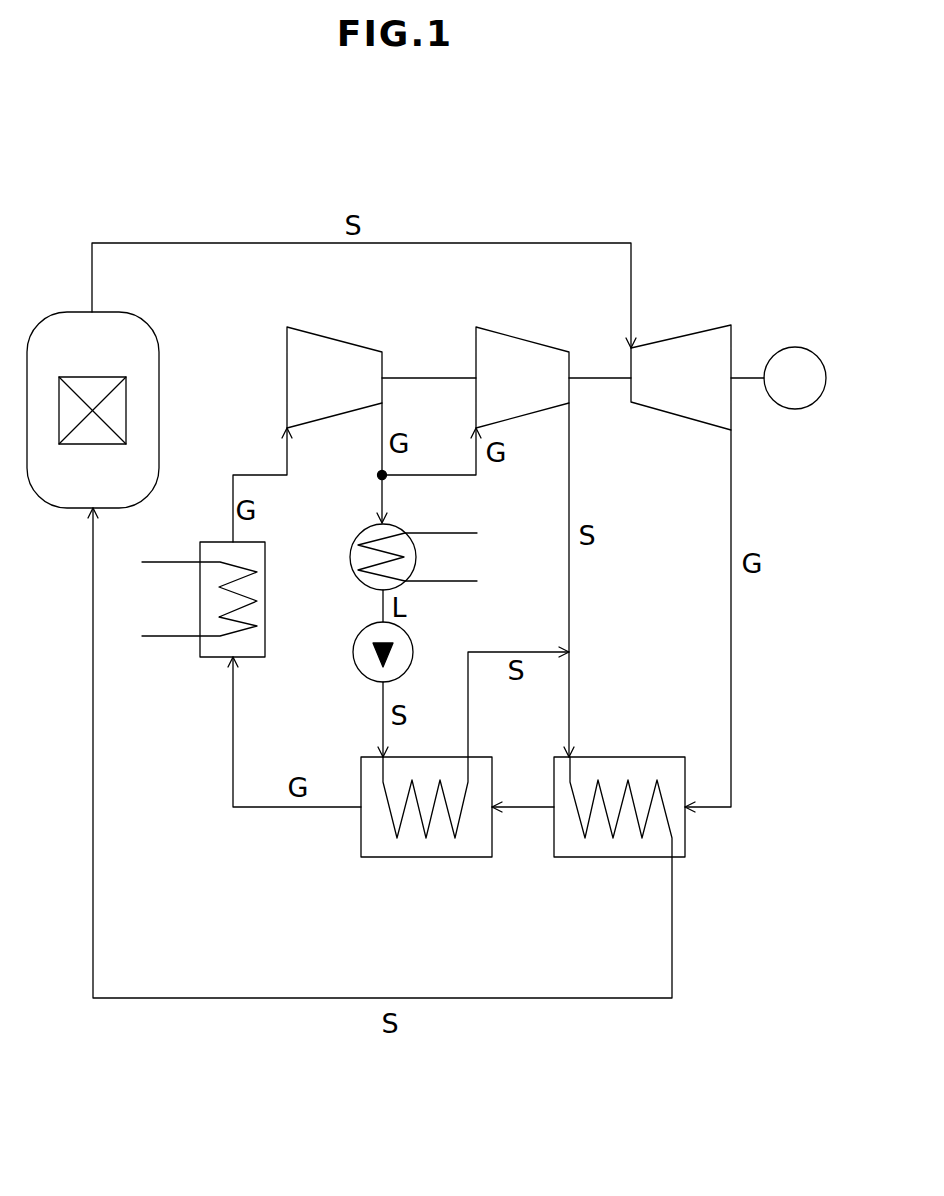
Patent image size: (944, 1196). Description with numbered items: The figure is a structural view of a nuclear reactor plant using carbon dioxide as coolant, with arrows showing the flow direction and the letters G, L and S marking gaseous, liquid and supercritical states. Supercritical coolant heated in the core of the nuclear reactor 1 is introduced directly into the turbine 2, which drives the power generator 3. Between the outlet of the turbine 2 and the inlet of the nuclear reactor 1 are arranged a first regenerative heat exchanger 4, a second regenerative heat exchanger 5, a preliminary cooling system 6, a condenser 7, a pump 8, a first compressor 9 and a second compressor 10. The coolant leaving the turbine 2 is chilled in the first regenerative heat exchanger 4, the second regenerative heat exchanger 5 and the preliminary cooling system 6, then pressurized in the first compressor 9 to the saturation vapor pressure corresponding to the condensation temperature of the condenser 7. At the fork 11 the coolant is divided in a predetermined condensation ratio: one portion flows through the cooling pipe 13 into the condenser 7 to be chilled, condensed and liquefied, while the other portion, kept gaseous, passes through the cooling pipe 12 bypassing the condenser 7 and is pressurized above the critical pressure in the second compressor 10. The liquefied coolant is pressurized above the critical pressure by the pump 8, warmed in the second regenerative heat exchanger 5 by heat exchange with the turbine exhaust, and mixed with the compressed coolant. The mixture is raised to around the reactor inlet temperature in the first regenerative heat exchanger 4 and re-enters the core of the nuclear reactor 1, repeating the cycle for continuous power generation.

The nuclear reactor 1 is at (159, 370).
The turbine 2 is at (660, 340).
The power generator 3 is at (808, 347).
The first regenerative heat exchanger 4 is at (652, 857).
The second regenerative heat exchanger 5 is at (475, 857).
The preliminary cooling system 6 is at (265, 600).
The condenser 7 is at (350, 552).
The pump 8 is at (353, 645).
The first compressor 9 is at (328, 335).
The second compressor 10 is at (514, 338).
The fork 11 is at (382, 475).
The cooling pipe 12 is at (438, 475).
The cooling pipe 13 is at (385, 493).